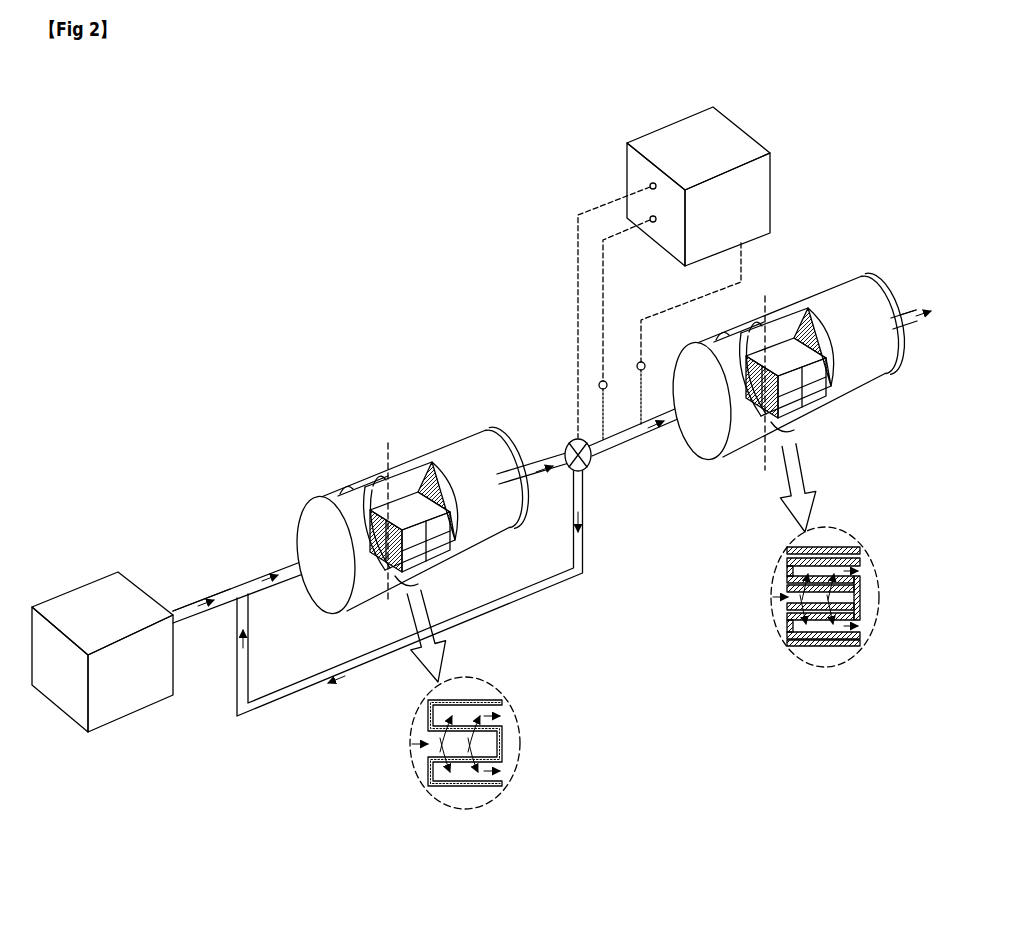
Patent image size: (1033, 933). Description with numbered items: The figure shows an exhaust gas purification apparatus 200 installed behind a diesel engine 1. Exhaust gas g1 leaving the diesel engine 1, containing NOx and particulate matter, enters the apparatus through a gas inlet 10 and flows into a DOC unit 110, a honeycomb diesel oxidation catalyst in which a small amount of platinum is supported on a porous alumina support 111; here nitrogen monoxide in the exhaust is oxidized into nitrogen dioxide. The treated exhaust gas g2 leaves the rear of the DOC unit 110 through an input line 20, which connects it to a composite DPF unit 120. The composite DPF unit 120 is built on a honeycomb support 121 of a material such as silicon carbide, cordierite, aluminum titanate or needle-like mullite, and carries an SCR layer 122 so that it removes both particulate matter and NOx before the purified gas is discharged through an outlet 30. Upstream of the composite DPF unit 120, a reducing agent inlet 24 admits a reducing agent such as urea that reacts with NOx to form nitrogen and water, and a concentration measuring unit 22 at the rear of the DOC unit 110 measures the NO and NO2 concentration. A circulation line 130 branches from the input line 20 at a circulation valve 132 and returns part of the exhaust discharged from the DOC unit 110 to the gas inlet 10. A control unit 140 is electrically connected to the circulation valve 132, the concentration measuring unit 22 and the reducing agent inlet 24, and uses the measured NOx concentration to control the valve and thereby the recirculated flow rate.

The exhaust gas purification apparatus 200 is at (77, 82).
The diesel engine 1 is at (95, 583).
The exhaust gas g1 is at (205, 596).
The gas inlet 10 is at (264, 573).
The DOC unit 110 is at (467, 438).
The porous alumina support 111 is at (482, 701).
The circulation line 130 is at (300, 690).
The circulation valve 132 is at (589, 469).
The input line 20 is at (648, 433).
The concentration measuring unit 22 is at (598, 383).
The reducing agent inlet 24 is at (639, 360).
The control unit 140 is at (772, 201).
The composite DPF unit 120 is at (846, 282).
The support 121 is at (850, 559).
The SCR layer 122 is at (846, 550).
The outlet 30 is at (907, 308).
The exhaust gas g2 is at (915, 322).